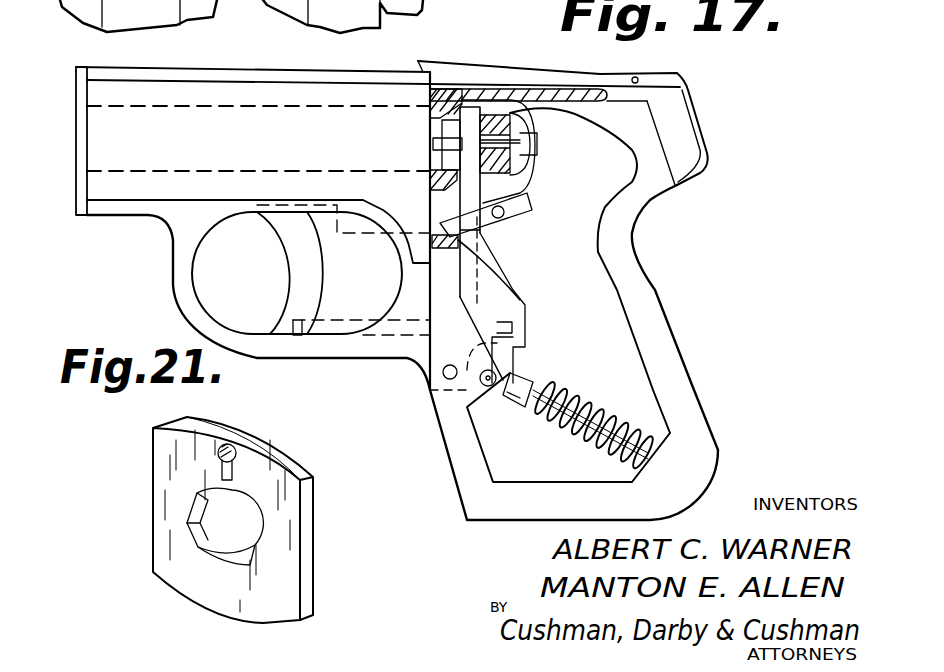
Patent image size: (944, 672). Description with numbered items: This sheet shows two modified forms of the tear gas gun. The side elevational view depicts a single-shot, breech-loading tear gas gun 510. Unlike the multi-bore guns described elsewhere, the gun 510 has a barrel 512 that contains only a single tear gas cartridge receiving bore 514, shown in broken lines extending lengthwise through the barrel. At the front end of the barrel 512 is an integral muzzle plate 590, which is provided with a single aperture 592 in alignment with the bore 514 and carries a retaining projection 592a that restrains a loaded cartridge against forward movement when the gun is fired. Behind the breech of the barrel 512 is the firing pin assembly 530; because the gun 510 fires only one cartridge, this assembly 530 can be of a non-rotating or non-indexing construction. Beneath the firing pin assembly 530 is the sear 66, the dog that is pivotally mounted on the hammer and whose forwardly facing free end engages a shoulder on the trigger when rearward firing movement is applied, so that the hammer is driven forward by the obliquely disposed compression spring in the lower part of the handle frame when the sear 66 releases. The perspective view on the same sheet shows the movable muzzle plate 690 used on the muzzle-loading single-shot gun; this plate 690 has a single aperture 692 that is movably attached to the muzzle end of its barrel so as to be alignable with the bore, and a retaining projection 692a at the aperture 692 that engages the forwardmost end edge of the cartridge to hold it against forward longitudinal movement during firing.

In FIG. 17, the muzzle plate 590 is at (83, 56).
In FIG. 17, the tear gas cartridge receiving bore 514 is at (216, 108).
In FIG. 17, the barrel 512 is at (373, 70).
In FIG. 17, the tear gas gun 510 is at (507, 38).
In FIG. 17, the aperture 592 is at (78, 107).
In FIG. 17, the retaining projection 592a is at (77, 163).
In FIG. 17, the firing pin assembly 530 is at (537, 170).
In FIG. 17, the sear 66 is at (532, 203).
In FIG. 21, the movable muzzle plate 690 is at (307, 478).
In FIG. 21, the aperture 692 is at (247, 520).
In FIG. 21, the retaining projection 692a is at (237, 563).